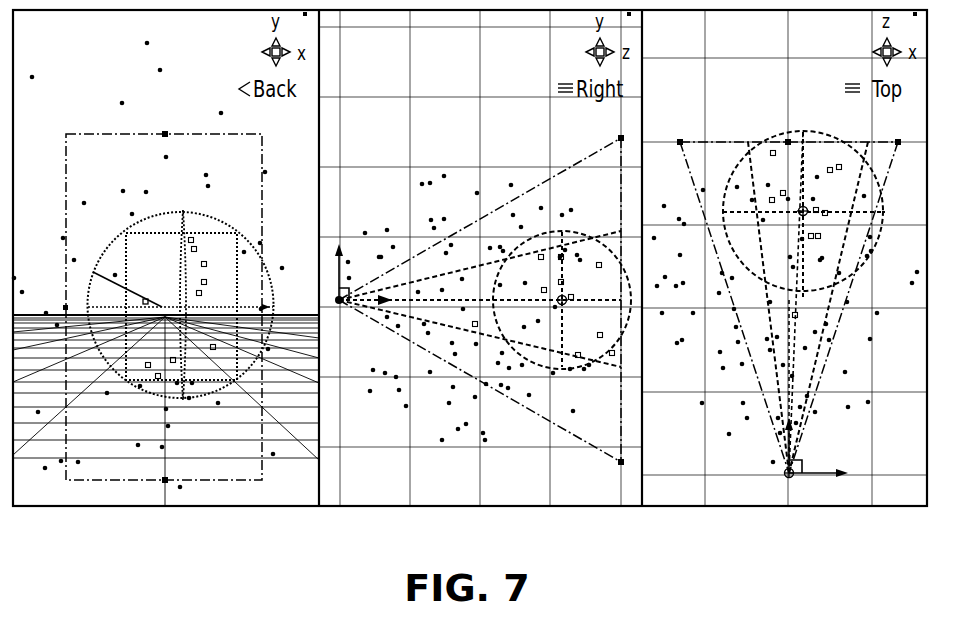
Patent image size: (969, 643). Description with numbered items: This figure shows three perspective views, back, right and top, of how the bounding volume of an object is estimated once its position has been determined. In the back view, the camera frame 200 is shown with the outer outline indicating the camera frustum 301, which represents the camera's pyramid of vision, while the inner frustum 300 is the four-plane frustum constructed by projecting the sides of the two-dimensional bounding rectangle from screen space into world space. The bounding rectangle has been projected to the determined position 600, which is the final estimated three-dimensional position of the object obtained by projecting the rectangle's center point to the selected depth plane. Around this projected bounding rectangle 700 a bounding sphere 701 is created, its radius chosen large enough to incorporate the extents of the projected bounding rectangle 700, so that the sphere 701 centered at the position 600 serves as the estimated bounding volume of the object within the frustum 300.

The camera frame 200 is at (88, 134).
The frustum 300 is at (470, 333).
The camera frustum 301 is at (370, 317).
The estimated 3D position 600 is at (566, 294).
The projected bounding rectangle 700 is at (157, 233).
The bounding sphere 701 is at (187, 225).